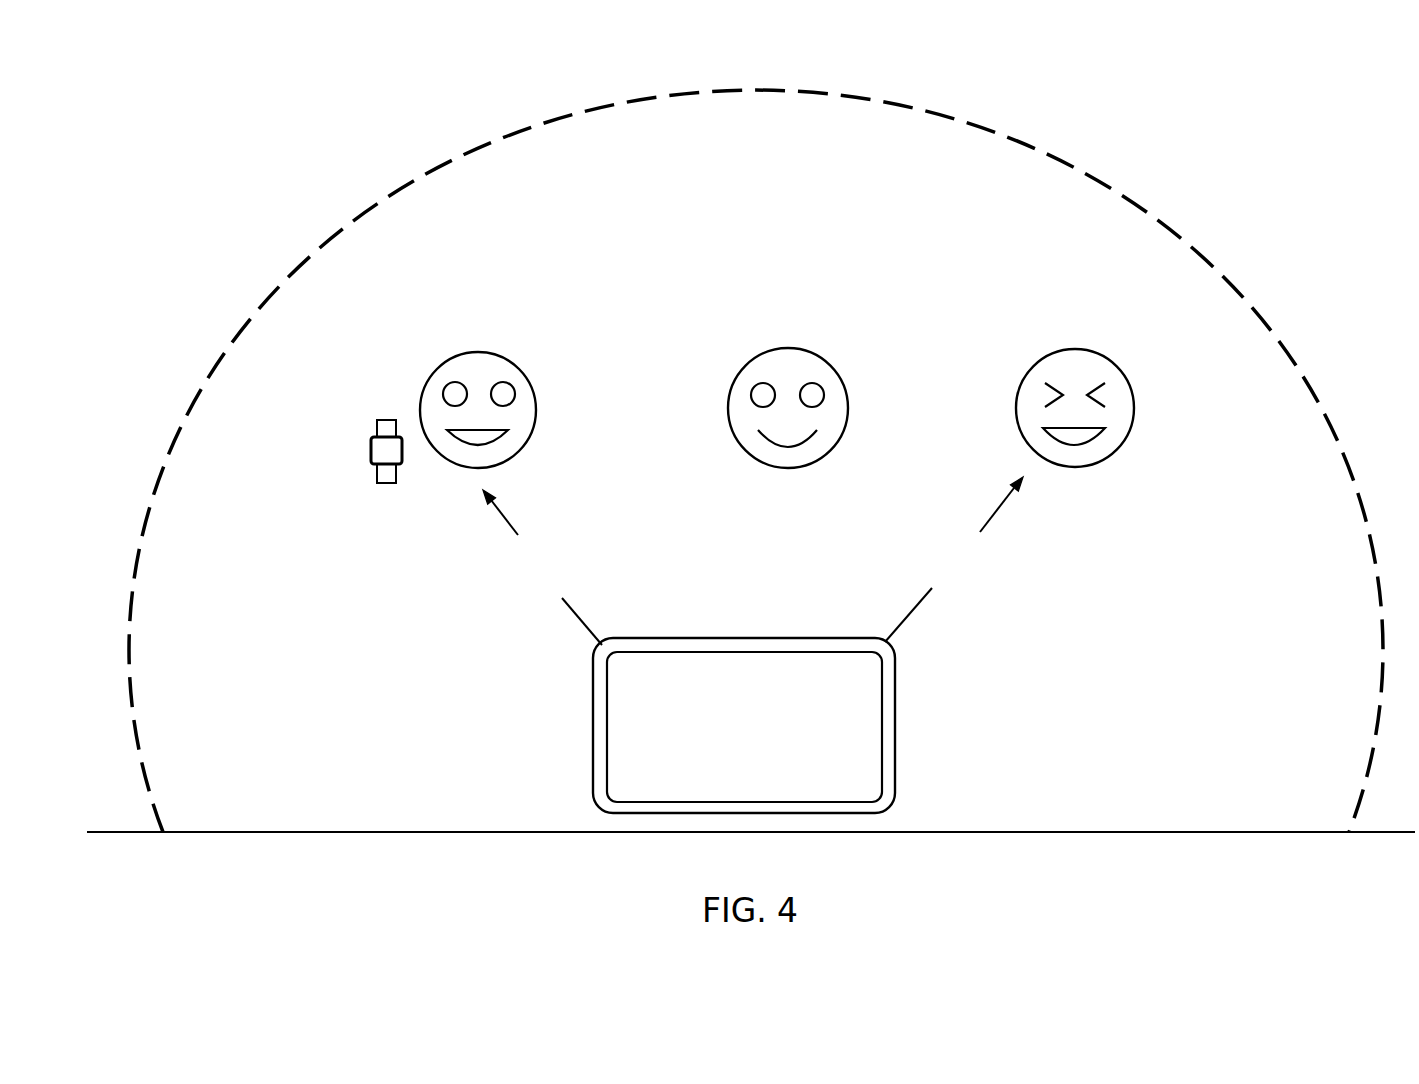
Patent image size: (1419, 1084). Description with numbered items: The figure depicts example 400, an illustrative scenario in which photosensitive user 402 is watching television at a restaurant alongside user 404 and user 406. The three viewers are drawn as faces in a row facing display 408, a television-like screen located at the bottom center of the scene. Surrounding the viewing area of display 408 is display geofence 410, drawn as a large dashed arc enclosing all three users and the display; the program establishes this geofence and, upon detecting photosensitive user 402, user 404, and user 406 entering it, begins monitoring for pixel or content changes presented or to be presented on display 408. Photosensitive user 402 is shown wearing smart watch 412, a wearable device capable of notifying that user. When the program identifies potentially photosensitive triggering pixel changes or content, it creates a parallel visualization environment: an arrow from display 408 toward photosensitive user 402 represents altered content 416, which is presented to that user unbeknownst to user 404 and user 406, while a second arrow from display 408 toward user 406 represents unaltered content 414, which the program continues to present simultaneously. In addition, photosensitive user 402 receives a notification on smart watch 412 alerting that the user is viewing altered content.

The example 400 is at (269, 116).
The photosensitive user 402 is at (478, 351).
The user 404 is at (788, 347).
The user 406 is at (1075, 348).
The display 408 is at (897, 722).
The display geofence 410 is at (1110, 187).
The smart watch 412 is at (368, 452).
The unaltered content 414 is at (1017, 560).
The altered content 416 is at (480, 570).